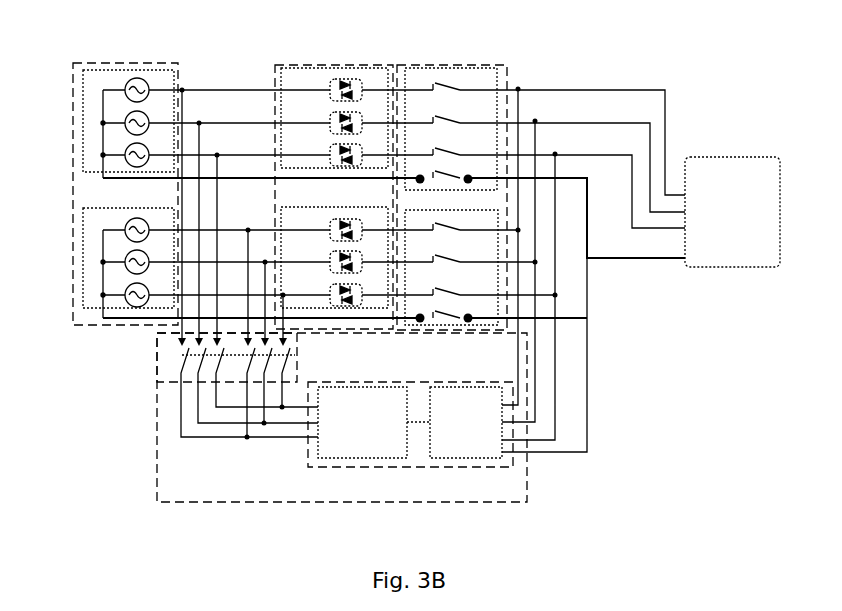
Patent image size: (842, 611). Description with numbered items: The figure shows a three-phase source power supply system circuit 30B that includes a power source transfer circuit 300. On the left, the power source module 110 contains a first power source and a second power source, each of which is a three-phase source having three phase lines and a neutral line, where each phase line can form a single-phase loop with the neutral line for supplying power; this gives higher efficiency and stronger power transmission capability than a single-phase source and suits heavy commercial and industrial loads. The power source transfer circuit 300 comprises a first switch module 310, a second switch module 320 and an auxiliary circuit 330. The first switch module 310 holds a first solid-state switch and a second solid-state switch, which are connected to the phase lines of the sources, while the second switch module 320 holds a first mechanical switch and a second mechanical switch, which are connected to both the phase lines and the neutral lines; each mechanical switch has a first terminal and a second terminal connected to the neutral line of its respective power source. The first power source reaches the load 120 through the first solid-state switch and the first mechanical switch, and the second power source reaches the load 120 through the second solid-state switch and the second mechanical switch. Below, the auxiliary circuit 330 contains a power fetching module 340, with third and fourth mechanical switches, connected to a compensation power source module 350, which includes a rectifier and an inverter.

The power source module 110 is at (128, 62).
The first switch module 310 is at (338, 65).
The second switch module 320 is at (480, 65).
The load 120 is at (715, 162).
The power source transfer circuit 300 is at (624, 330).
The auxiliary circuit 330 is at (157, 420).
The power fetching module 340 is at (157, 355).
The compensation power source module 350 is at (513, 425).
The three-phase source power supply system circuit 30B is at (766, 494).